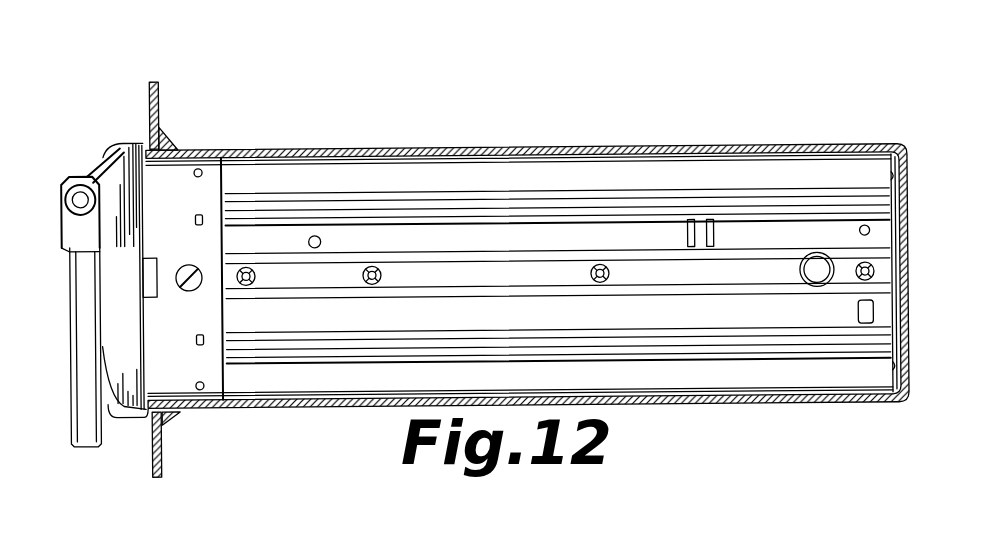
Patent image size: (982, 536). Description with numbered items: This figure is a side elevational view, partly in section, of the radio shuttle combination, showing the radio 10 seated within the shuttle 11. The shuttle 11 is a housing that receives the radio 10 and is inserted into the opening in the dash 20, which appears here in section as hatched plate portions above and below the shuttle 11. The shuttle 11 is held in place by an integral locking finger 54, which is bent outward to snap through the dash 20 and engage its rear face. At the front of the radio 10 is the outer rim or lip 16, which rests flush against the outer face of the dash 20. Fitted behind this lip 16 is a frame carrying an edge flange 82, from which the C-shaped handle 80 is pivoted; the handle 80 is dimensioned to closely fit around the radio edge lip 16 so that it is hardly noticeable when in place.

The radio 10 is at (524, 287).
The shuttle 11 is at (546, 146).
The outer rim or lip 16 is at (111, 139).
The dash 20 is at (161, 455).
The locking finger 54 is at (172, 417).
The handle 80 is at (64, 343).
The edge flange 82 is at (99, 173).